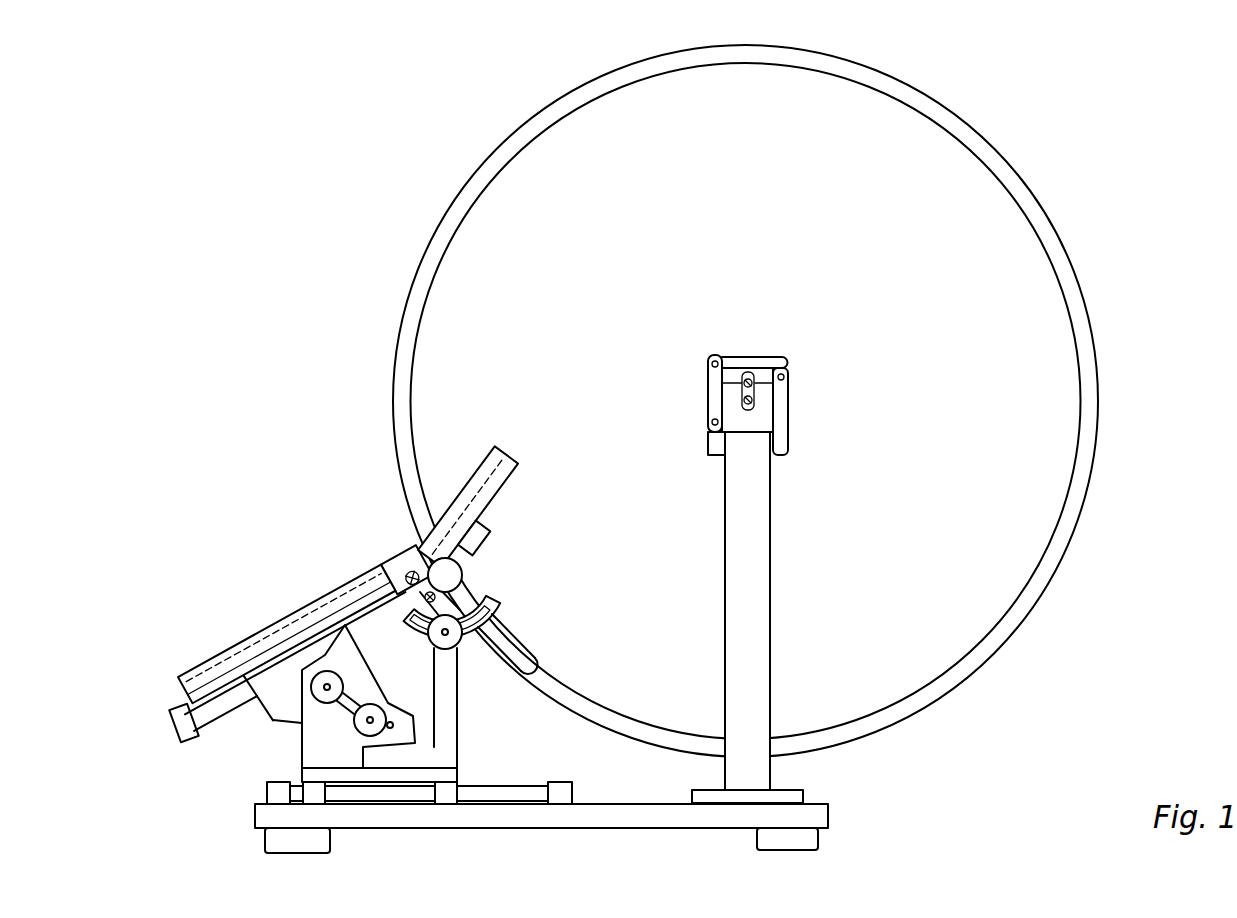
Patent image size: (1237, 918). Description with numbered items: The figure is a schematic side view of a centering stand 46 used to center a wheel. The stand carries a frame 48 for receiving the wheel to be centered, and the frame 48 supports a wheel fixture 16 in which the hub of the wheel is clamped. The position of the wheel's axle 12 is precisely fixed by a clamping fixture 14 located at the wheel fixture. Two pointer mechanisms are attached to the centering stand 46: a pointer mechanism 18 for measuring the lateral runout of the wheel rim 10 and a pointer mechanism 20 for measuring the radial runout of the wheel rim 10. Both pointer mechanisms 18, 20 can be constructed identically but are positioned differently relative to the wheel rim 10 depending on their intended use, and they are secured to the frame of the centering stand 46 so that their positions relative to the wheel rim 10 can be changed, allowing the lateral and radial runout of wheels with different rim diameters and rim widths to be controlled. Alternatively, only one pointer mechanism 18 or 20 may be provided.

The wheel rim 10 is at (1090, 336).
The axle 12 is at (757, 398).
The clamping fixture 14 is at (714, 392).
The wheel fixture 16 is at (739, 412).
The pointer mechanism 18 is at (470, 494).
The pointer mechanism 20 is at (306, 608).
The centering stand 46 is at (535, 821).
The frame 48 is at (752, 508).